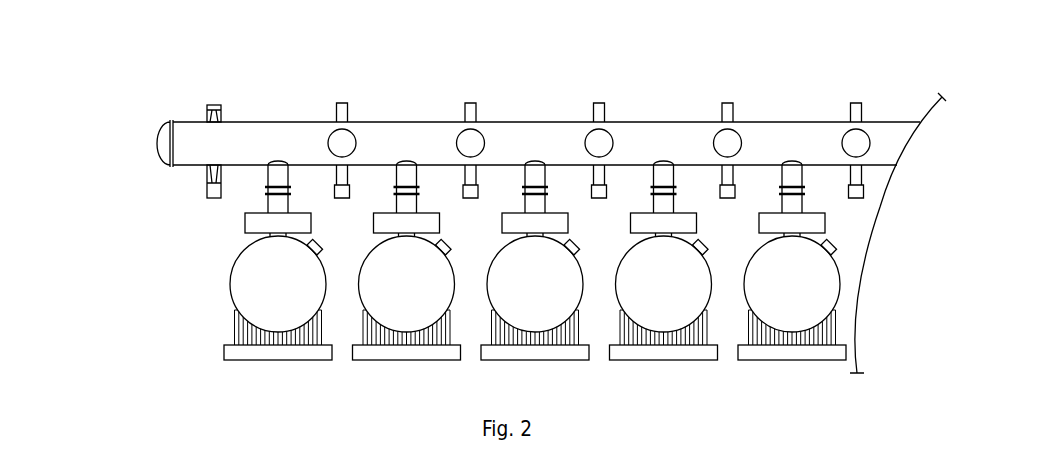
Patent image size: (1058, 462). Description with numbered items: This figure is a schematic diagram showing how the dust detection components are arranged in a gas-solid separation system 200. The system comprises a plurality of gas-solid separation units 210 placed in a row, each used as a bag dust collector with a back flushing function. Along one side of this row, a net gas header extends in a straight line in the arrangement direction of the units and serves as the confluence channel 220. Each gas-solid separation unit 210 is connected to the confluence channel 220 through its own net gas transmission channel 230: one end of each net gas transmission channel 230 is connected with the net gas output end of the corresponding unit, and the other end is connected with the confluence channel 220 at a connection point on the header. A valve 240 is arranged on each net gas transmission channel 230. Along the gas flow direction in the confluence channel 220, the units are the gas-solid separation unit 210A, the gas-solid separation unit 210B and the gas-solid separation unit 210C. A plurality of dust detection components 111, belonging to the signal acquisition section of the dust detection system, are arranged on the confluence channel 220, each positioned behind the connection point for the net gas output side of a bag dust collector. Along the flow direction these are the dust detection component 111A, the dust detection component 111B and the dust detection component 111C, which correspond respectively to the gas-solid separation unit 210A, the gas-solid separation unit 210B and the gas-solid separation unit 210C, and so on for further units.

The gas-solid separation system 200 is at (128, 225).
The dust detection component 111 is at (330, 133).
The dust detection component 111A is at (365, 132).
The dust detection component 111B is at (494, 132).
The dust detection component 111C is at (621, 132).
The confluence channel 220 is at (763, 122).
The net gas transmission channel 230 is at (268, 177).
The valve 240 is at (245, 224).
The gas-solid separation unit 210 is at (518, 308).
The gas-solid separation unit 210A is at (253, 295).
The gas-solid separation unit 210B is at (407, 298).
The gas-solid separation unit 210C is at (535, 298).